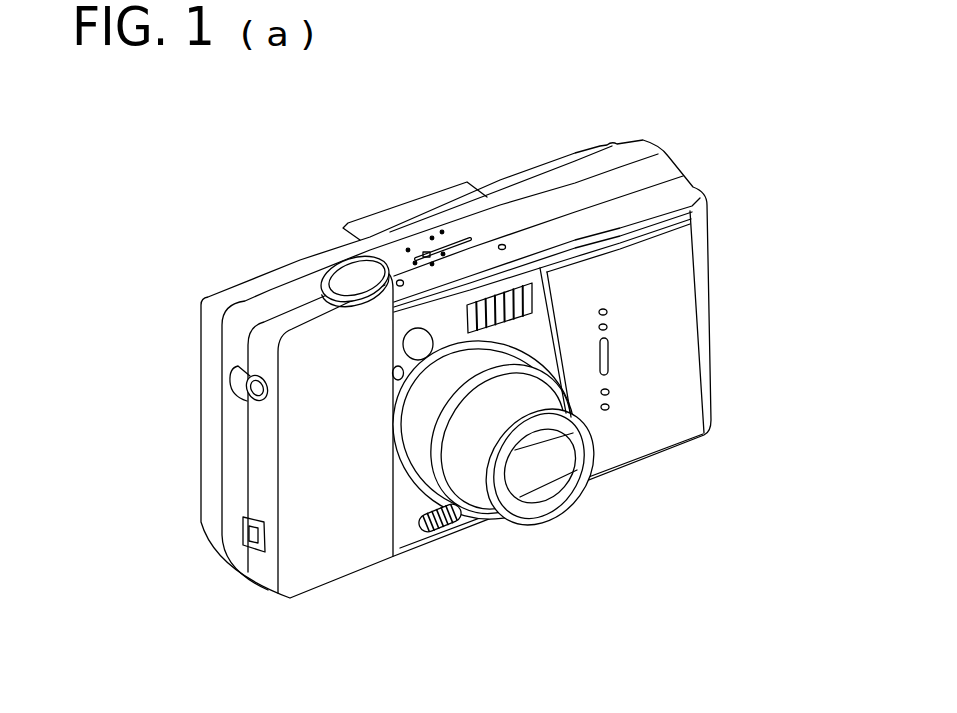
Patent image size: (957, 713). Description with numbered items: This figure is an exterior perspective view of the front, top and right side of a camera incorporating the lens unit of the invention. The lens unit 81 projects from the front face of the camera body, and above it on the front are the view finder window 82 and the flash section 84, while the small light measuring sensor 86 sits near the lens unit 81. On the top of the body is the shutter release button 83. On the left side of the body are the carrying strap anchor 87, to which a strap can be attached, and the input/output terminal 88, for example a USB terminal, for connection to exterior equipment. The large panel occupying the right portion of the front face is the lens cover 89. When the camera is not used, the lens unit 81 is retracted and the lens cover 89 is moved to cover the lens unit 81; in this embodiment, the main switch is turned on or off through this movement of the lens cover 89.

The lens unit 81 is at (537, 475).
The view finder window 82 is at (418, 338).
The shutter release button 83 is at (338, 272).
The flash section 84 is at (473, 307).
The light measuring sensor 86 is at (393, 363).
The carrying strap anchor 87 is at (230, 377).
The input/output terminal 88 is at (243, 535).
The lens cover 89 is at (680, 383).